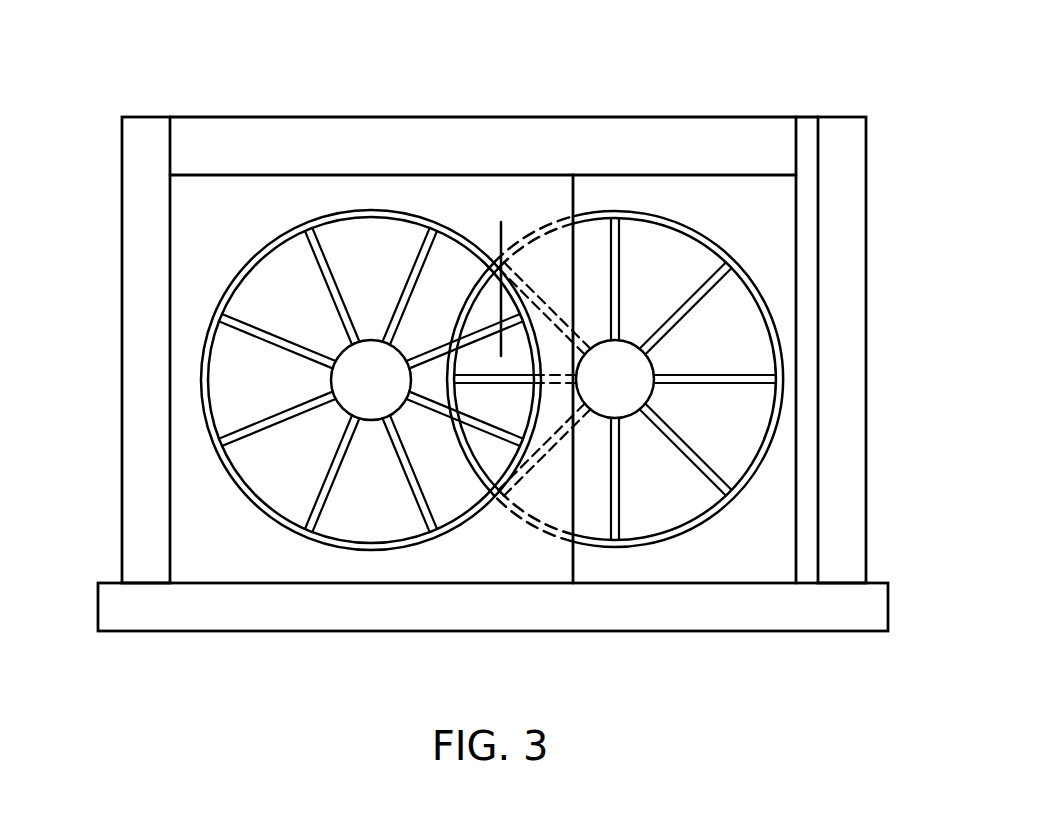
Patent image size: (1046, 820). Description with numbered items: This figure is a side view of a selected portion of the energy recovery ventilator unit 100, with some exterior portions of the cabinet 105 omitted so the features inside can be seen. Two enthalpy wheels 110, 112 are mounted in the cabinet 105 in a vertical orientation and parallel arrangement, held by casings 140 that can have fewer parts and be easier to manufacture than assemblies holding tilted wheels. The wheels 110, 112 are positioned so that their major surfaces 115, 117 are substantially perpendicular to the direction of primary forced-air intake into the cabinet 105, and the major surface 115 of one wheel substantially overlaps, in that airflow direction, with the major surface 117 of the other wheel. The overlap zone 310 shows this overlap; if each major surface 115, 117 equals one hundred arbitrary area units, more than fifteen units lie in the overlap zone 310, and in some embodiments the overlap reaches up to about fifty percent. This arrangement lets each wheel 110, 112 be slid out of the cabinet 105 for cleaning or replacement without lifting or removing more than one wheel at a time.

The energy recovery ventilator unit 100 is at (366, 70).
The cabinet 105 is at (778, 113).
The enthalpy wheel 110 is at (264, 525).
The enthalpy wheel 112 is at (721, 524).
The major surface 115 is at (240, 310).
The major surface 117 is at (709, 268).
The casings 140 is at (170, 211).
The overlap zone 310 is at (500, 273).